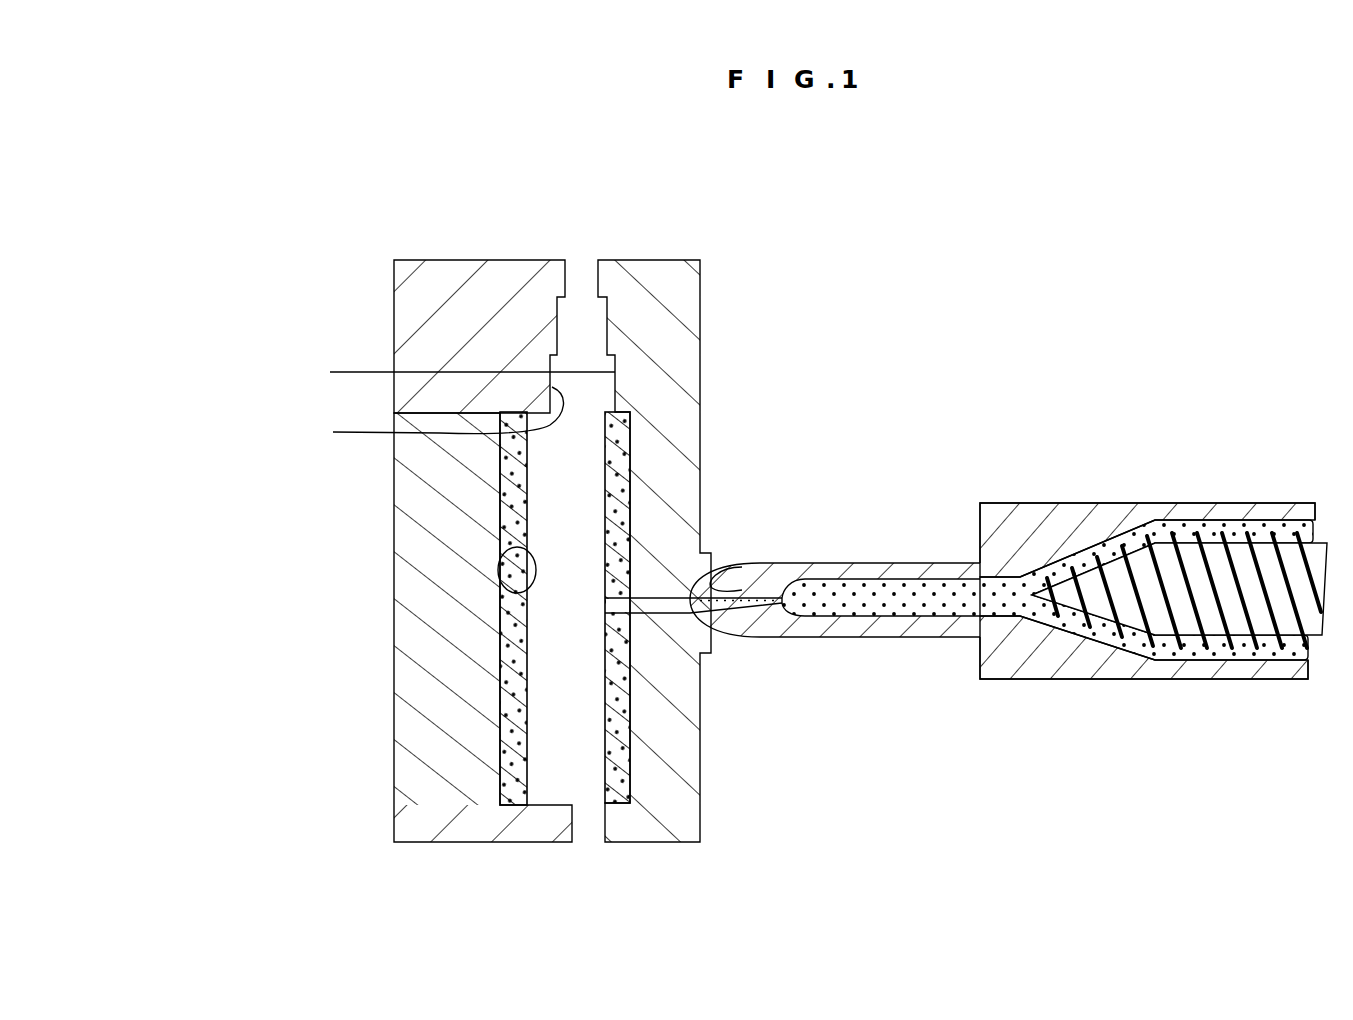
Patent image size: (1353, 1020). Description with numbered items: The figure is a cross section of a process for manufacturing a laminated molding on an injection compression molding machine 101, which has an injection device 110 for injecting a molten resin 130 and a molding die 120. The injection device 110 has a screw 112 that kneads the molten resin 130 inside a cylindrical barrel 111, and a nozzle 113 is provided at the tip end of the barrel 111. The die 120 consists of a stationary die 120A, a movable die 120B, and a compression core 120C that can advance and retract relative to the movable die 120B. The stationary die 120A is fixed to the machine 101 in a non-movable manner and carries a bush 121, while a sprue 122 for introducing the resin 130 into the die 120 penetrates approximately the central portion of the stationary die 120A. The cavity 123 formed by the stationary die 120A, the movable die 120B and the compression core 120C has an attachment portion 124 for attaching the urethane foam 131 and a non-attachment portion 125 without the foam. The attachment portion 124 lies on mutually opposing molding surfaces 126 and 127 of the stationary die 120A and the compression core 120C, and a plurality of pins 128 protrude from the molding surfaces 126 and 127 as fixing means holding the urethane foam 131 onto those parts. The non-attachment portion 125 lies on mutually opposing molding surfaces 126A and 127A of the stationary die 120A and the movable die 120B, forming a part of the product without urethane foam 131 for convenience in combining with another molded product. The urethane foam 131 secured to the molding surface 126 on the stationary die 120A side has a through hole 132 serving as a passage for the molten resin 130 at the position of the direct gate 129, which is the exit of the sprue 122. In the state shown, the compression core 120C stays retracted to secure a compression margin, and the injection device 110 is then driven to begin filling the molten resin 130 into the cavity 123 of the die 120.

The injection compression molding machine 101 is at (890, 352).
The injection device 110 is at (1087, 438).
The cylindrical barrel 111 is at (1238, 503).
The screw 112 is at (1273, 557).
The nozzle 113 is at (866, 563).
The molding die 120 is at (757, 237).
The stationary die 120A is at (700, 323).
The movable die 120B is at (394, 300).
The compression core 120C is at (394, 541).
The bush 121 is at (745, 563).
The sprue 122 is at (647, 607).
The cavity 123 is at (570, 735).
The attachment portion 124 is at (262, 581).
The non-attachment portion 125 is at (258, 362).
The molding surface 126 is at (603, 557).
The molding surface 126A is at (439, 371).
The molding surface 127 is at (500, 588).
The molding surface 127A is at (413, 418).
The pin 128 is at (500, 440).
The direct gate 129 is at (633, 620).
The molten resin 130 is at (1165, 535).
The urethane foam 131 is at (507, 728).
The through hole 132 is at (603, 640).